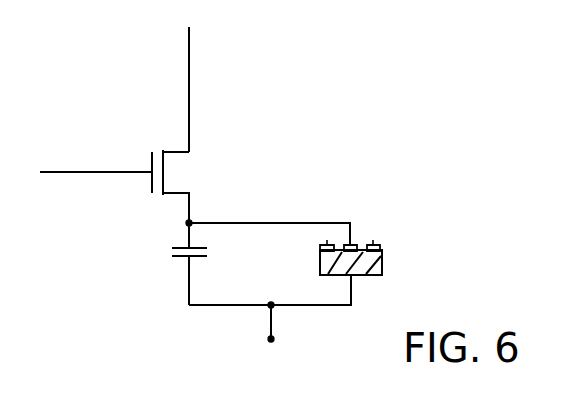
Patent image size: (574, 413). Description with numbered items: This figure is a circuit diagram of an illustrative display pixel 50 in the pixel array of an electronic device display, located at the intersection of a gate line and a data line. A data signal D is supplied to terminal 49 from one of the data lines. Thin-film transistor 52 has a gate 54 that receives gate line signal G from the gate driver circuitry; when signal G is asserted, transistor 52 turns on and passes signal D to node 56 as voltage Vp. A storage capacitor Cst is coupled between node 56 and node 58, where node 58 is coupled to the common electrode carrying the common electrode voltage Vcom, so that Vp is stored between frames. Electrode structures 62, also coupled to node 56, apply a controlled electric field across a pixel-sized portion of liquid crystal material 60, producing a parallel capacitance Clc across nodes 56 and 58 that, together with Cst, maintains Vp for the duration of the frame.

The terminal 49 is at (190, 75).
The pixel 50 is at (358, 97).
The thin-film transistor 52 is at (137, 194).
The gate 54 is at (63, 174).
The node 56 is at (191, 221).
The node 58 is at (275, 339).
The liquid crystal material 60 is at (320, 262).
The electrode structures 62 is at (327, 241).